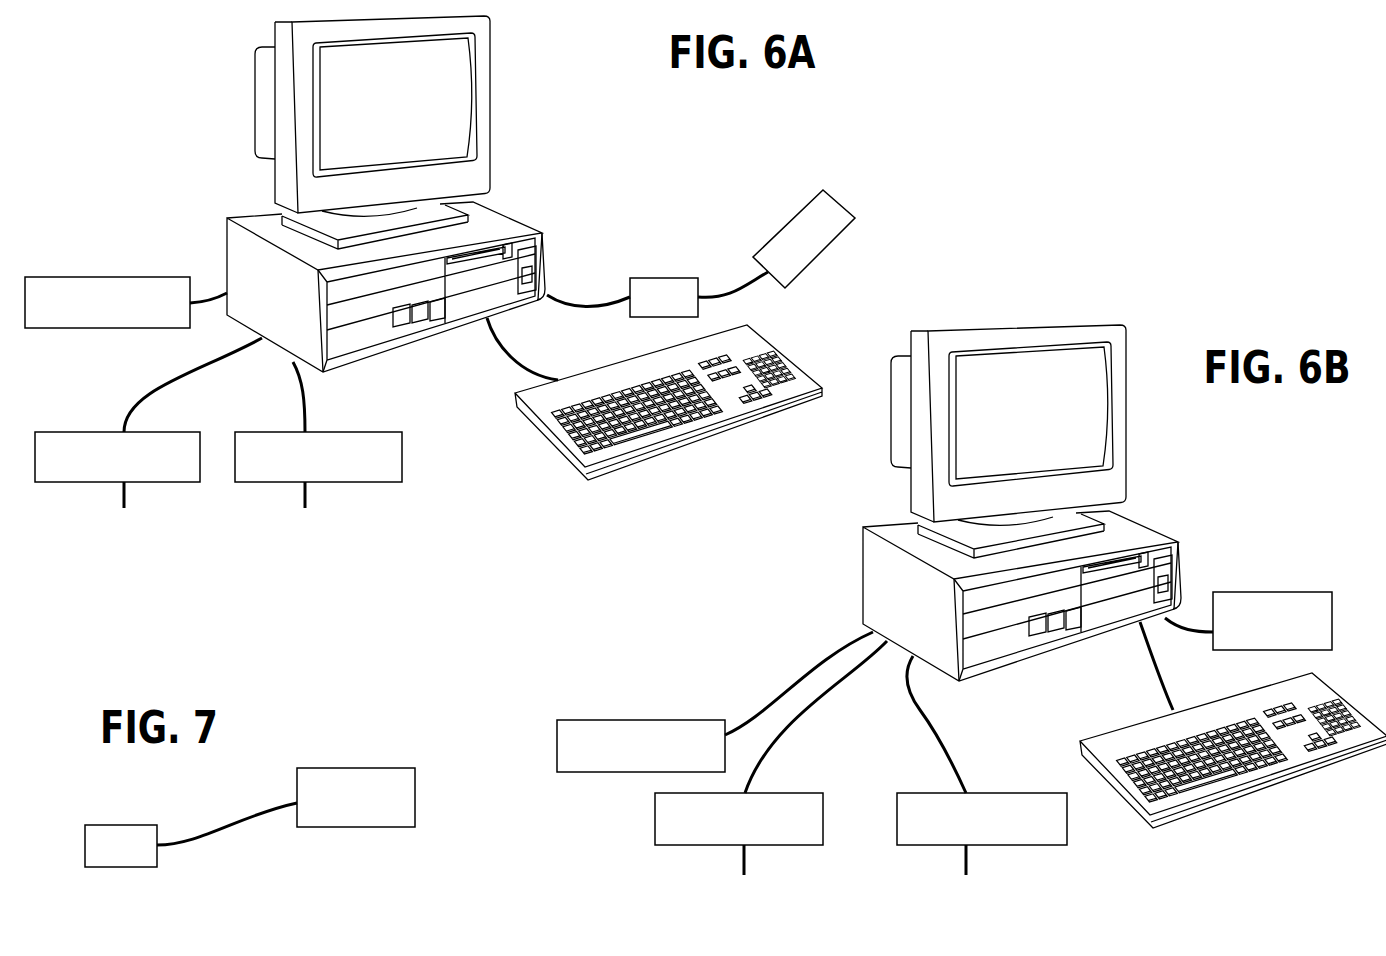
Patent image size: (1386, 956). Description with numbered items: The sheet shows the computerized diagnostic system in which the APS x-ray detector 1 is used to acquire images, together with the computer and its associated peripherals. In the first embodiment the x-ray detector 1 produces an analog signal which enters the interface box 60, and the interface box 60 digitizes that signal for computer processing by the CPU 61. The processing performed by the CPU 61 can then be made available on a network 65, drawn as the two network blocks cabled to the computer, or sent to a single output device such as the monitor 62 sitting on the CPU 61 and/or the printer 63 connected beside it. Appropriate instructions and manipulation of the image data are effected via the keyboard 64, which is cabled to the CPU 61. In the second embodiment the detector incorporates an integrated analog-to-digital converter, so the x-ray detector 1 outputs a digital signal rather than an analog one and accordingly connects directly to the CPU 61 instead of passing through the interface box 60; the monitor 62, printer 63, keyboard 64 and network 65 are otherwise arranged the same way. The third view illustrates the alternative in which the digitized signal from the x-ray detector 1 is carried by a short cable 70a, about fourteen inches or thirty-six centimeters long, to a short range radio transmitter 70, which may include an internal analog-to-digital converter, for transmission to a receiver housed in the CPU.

In FIG. 6A, the x-ray detector 1 is at (800, 265).
In FIG. 6B, the x-ray detector 1 is at (1305, 642).
In FIG. 7, the x-ray detector 1 is at (375, 775).
In FIG. 6A, the interface box 60 is at (657, 278).
In FIG. 6A, the CPU 61 is at (417, 342).
In FIG. 6B, the CPU 61 is at (990, 670).
In FIG. 6A, the monitor 62 is at (460, 132).
In FIG. 6B, the monitor 62 is at (1095, 447).
In FIG. 6A, the printer 63 is at (105, 322).
In FIG. 6B, the printer 63 is at (630, 767).
In FIG. 6A, the keyboard 64 is at (522, 412).
In FIG. 6B, the keyboard 64 is at (1128, 795).
In FIG. 6A, the network 65 is at (243, 460).
In FIG. 6B, the network 65 is at (903, 827).
In FIG. 7, the short range radio transmitter 70 is at (112, 824).
In FIG. 7, the cable 70a is at (207, 840).